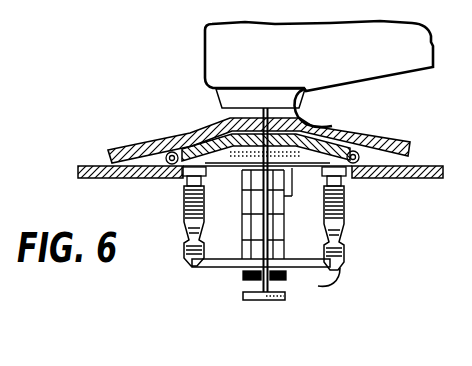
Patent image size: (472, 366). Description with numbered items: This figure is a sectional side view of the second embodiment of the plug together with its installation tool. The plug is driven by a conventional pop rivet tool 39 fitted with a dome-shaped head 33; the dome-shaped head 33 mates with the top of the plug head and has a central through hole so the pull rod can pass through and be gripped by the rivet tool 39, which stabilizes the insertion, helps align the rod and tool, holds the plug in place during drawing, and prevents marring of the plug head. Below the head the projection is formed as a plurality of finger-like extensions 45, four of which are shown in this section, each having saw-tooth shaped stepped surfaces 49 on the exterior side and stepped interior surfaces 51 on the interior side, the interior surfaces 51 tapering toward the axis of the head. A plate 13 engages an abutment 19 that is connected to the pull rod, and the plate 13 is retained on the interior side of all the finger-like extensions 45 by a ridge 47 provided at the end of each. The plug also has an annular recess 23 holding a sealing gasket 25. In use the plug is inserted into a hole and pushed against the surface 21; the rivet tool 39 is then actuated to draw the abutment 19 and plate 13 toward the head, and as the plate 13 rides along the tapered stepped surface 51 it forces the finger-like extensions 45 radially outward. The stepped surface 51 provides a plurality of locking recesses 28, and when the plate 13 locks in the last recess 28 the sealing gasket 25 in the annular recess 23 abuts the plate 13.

The plate 13 is at (217, 268).
The abutment 19 is at (247, 302).
The surface 21 is at (427, 165).
The annular recess 23 is at (347, 134).
The sealing gasket 25 is at (207, 171).
The locking recesses 28 is at (324, 175).
The dome-shaped head 33 is at (259, 126).
The pop rivet tool 39 is at (221, 51).
The finger-like extensions 45 is at (248, 211).
The ridge 47 is at (328, 287).
The stepped surface 49 is at (345, 229).
The stepped interior surface 51 is at (324, 207).